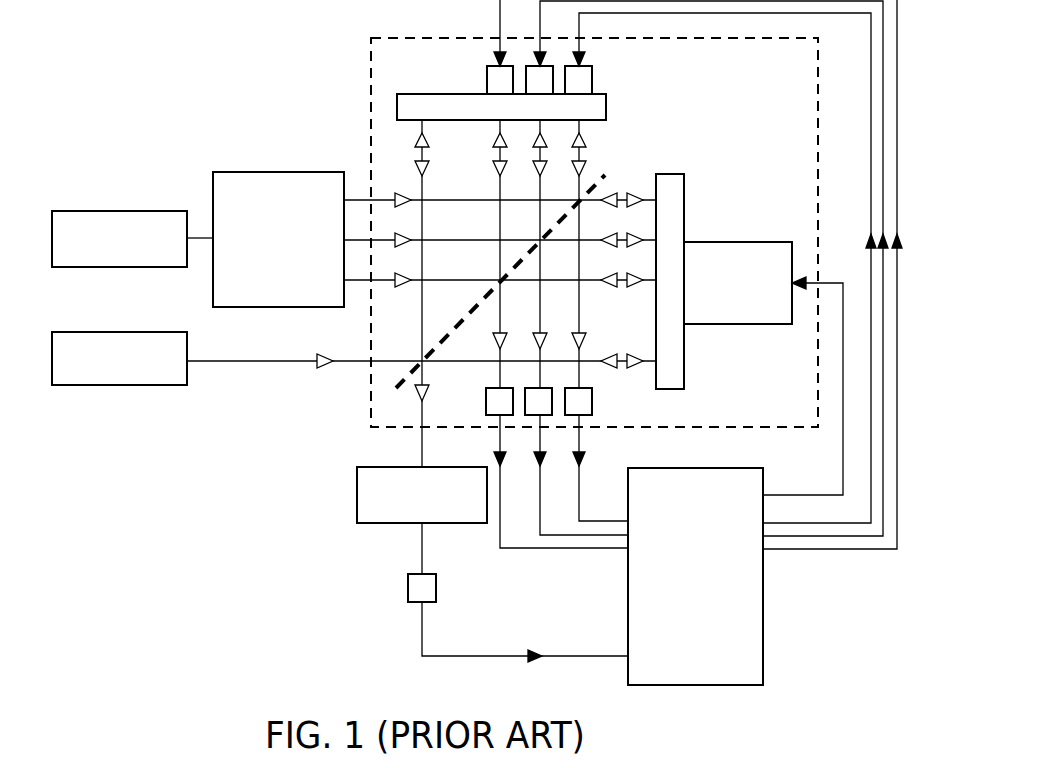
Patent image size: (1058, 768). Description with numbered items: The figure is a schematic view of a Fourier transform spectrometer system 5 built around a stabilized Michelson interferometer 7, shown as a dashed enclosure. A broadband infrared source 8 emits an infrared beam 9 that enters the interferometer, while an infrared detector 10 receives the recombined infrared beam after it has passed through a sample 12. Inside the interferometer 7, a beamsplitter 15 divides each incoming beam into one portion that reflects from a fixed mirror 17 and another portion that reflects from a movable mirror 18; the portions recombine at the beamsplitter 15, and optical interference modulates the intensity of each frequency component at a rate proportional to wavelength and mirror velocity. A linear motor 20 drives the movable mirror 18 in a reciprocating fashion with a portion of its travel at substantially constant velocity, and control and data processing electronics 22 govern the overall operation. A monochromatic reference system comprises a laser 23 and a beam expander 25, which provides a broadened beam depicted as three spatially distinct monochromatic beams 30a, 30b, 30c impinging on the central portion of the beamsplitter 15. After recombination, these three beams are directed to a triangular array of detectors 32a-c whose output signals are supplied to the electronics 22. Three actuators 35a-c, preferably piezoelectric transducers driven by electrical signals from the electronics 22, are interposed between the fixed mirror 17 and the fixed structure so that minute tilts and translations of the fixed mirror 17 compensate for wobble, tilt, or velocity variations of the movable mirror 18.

The Fourier transform spectrometer system 5 is at (225, 550).
The stabilized Michelson interferometer 7 is at (402, 38).
The broadband infrared source 8 is at (153, 332).
The infrared beam 9 is at (213, 361).
The infrared detector 10 is at (408, 574).
The sample 12 is at (395, 467).
The beamsplitter 15 is at (590, 176).
The fixed mirror 17 is at (442, 92).
The movable mirror 18 is at (668, 174).
The linear motor 20 is at (745, 242).
The control and data processing electronics 22 is at (715, 468).
The laser 23 is at (142, 210).
The beam expander 25 is at (300, 172).
The monochromatic beam 30a is at (430, 278).
The monochromatic beam 30b is at (430, 238).
The monochromatic beam 30c is at (430, 198).
The triangular array of detectors 32a-c is at (605, 402).
The actuators 35a-c is at (605, 82).